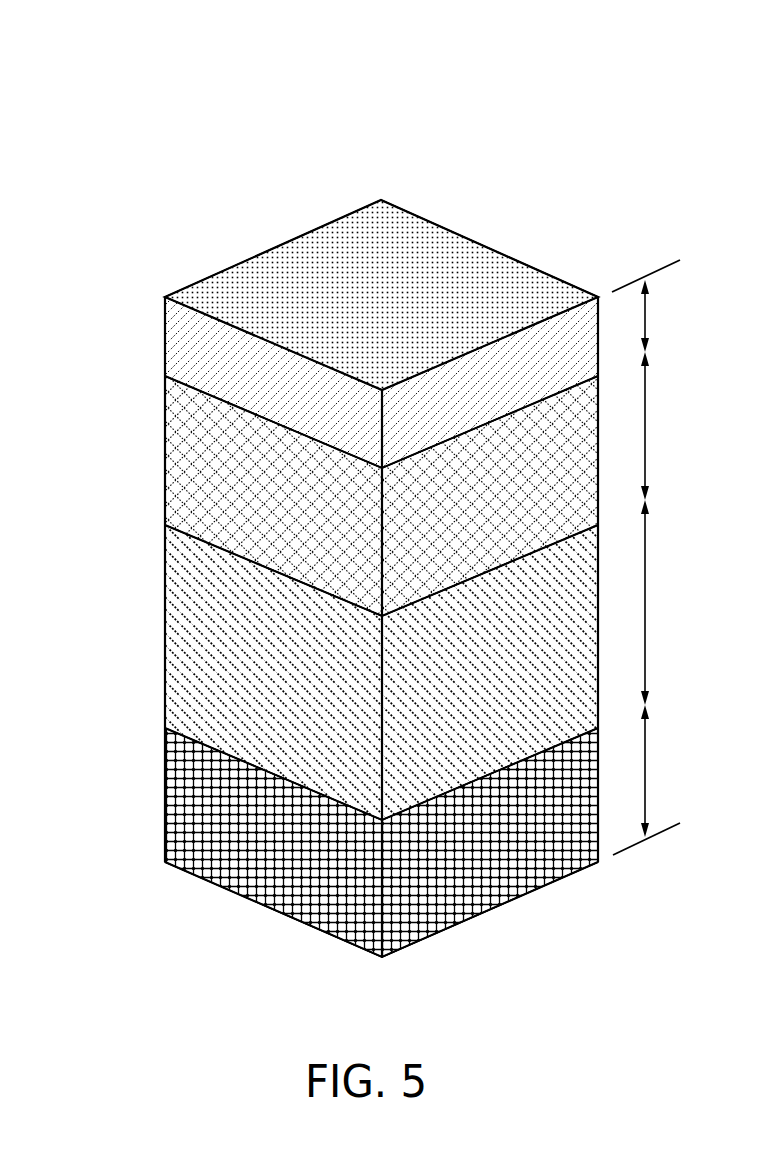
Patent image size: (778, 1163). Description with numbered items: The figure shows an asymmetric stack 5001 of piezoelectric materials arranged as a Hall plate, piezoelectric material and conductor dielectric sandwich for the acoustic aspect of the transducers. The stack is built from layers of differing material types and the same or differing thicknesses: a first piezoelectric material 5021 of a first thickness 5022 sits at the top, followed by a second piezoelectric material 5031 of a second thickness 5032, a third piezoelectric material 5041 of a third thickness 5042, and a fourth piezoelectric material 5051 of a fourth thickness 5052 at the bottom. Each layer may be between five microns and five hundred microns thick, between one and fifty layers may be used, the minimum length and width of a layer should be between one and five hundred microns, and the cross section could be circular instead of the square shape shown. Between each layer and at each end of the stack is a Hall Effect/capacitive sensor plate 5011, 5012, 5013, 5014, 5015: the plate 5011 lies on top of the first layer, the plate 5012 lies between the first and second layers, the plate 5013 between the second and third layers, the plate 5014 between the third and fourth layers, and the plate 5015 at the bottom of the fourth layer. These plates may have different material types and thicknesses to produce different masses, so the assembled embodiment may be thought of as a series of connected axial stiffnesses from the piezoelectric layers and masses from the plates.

The asymmetric stack 5001 is at (162, 125).
The Hall Effect/capacitive sensor plate 5011 is at (480, 273).
The Hall Effect/capacitive sensor plate 5012 is at (601, 372).
The Hall Effect/capacitive sensor plate 5013 is at (601, 521).
The Hall Effect/capacitive sensor plate 5014 is at (601, 722).
The Hall Effect/capacitive sensor plate 5015 is at (493, 918).
The first piezoelectric material 5021 is at (165, 343).
The first thickness 5022 is at (646, 306).
The second piezoelectric material 5031 is at (165, 456).
The second thickness 5032 is at (644, 426).
The third piezoelectric material 5041 is at (165, 626).
The third thickness 5042 is at (644, 602).
The fourth piezoelectric material 5051 is at (165, 808).
The fourth thickness 5052 is at (646, 780).